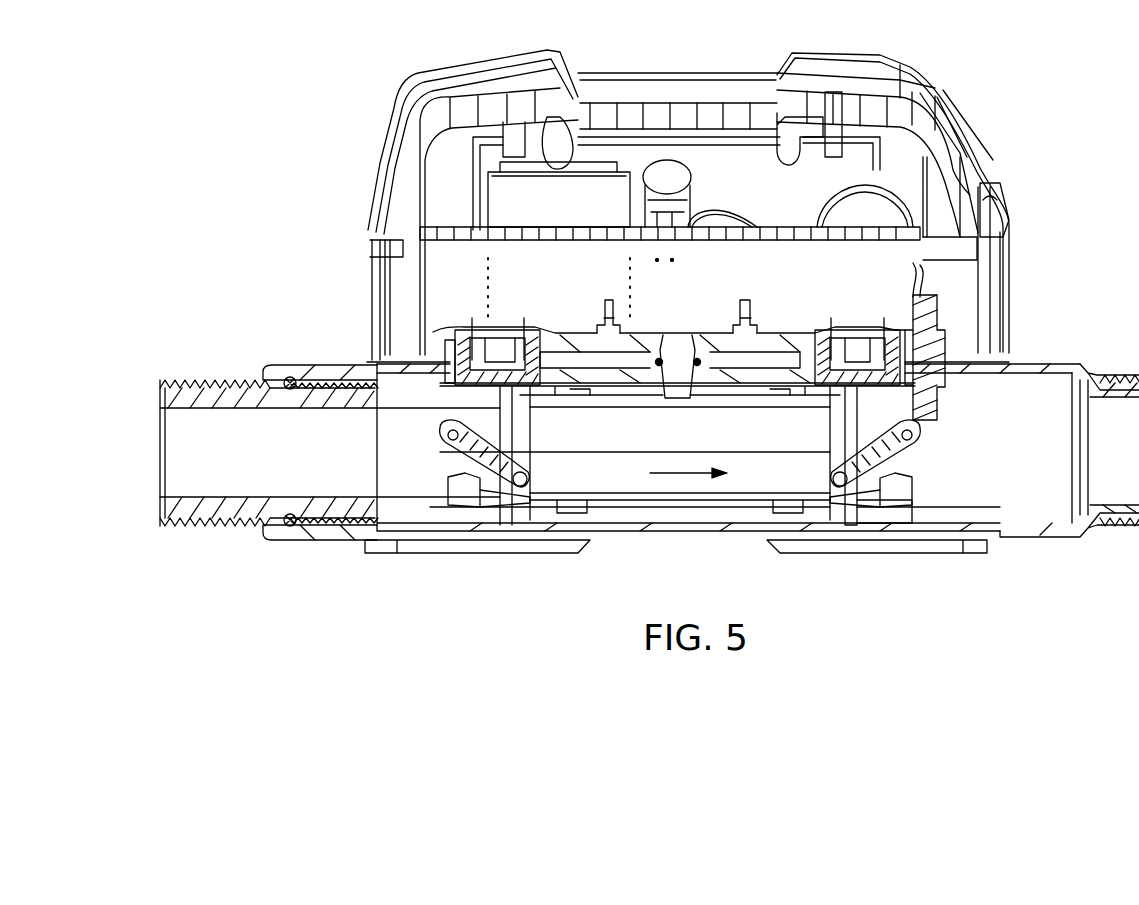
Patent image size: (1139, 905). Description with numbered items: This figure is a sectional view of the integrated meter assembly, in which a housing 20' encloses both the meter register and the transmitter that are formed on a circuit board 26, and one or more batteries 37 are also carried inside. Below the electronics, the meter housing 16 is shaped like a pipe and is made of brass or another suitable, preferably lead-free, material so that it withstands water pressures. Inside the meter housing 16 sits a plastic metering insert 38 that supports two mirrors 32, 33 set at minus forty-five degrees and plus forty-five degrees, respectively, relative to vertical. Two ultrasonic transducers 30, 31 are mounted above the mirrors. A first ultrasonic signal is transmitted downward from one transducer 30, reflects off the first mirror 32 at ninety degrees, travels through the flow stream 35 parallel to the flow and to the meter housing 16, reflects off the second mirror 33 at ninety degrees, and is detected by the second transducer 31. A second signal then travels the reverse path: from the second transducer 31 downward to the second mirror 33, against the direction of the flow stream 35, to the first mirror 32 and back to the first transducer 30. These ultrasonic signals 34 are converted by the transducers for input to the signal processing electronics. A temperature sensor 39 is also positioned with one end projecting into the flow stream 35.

The meter housing 16 is at (1070, 362).
The housing 20' is at (688, 198).
The circuit board 26 is at (571, 286).
The ultrasonic transducer 30 is at (443, 343).
The ultrasonic transducer 31 is at (913, 293).
The mirror 32 is at (450, 452).
The mirror 33 is at (910, 452).
The ultrasonic signals 34 is at (582, 450).
The flow stream 35 is at (678, 475).
The battery 37 is at (817, 197).
The metering insert 38 is at (872, 493).
The temperature sensor 39 is at (957, 350).